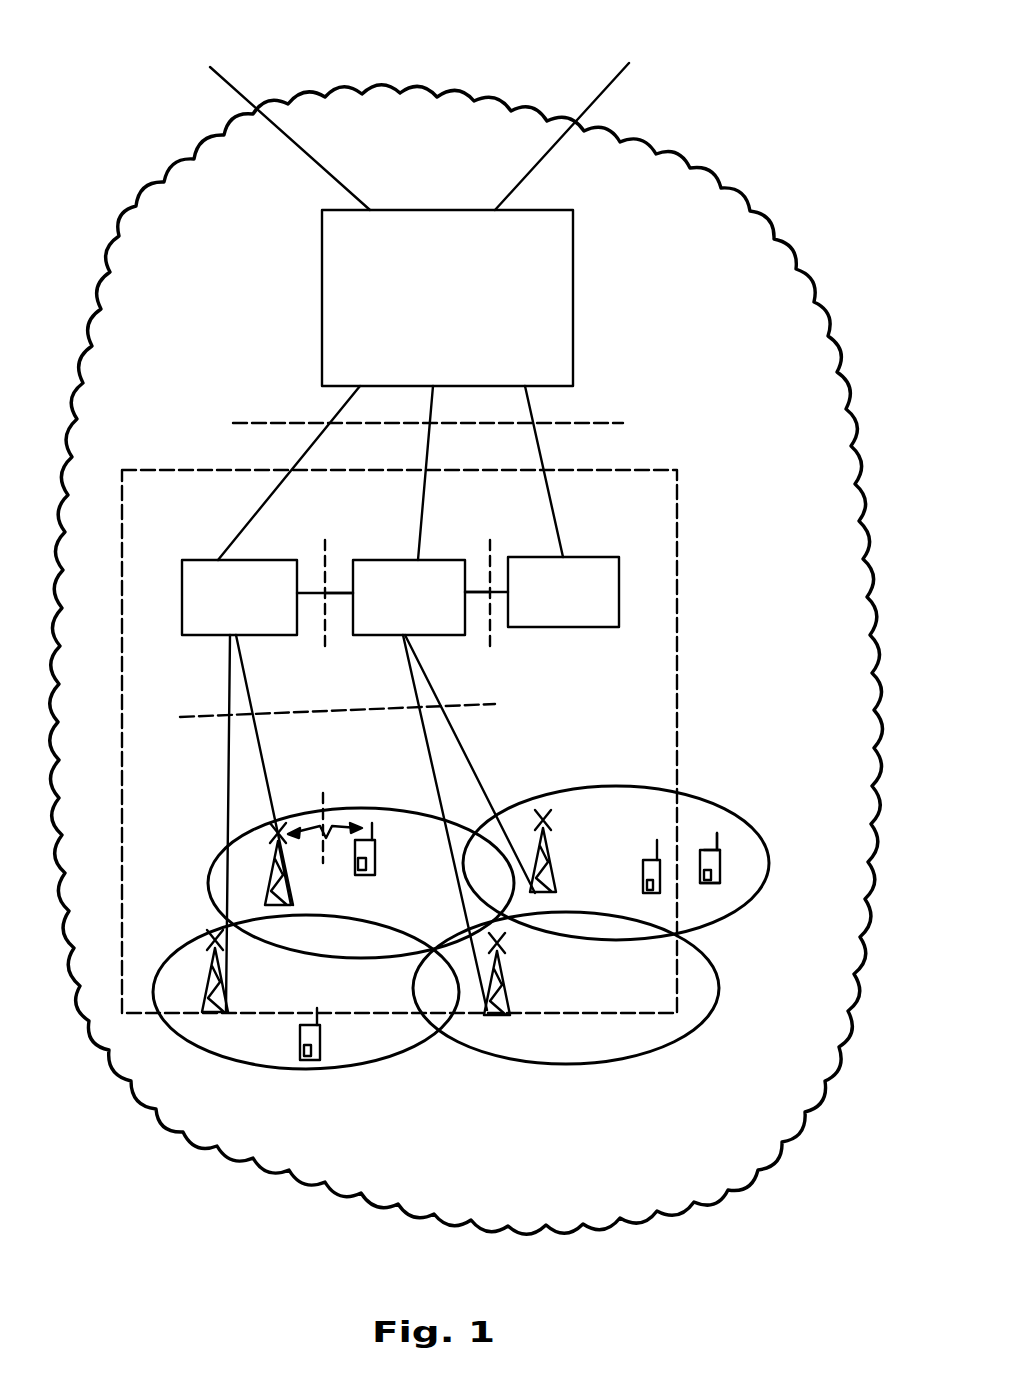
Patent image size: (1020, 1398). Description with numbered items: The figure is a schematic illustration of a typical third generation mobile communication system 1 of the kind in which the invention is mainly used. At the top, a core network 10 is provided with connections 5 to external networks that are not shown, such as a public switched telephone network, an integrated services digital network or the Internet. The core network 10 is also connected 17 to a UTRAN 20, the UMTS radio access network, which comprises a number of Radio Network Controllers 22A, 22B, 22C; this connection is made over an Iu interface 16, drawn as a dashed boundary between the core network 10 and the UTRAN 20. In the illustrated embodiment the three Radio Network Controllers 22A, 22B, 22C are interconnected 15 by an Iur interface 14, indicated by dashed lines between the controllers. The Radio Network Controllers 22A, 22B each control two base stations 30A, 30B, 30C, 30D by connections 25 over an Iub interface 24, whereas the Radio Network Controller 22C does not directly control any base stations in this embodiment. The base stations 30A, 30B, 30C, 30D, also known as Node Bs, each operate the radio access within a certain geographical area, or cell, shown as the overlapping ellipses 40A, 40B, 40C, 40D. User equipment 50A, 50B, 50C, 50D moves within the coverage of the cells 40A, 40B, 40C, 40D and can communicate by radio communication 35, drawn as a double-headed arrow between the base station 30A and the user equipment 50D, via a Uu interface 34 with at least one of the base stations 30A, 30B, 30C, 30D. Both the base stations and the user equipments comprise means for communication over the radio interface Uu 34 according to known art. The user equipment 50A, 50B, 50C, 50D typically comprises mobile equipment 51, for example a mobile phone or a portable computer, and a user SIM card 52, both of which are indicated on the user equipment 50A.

The mobile communication system 1 is at (720, 1200).
The connections to external networks 5 is at (219, 78).
The core network 10 is at (322, 332).
The Iur interface 14 is at (322, 560).
The interconnection 15 is at (348, 585).
The Iu interface 16 is at (250, 423).
The connection 17 is at (236, 535).
The UTRAN 20 is at (677, 497).
The Radio Network Controller 22A is at (213, 598).
The Radio Network Controller 22B is at (385, 605).
The Radio Network Controller 22C is at (568, 620).
The Iub interface 24 is at (492, 706).
The connections 25 is at (230, 748).
The base station 30A is at (225, 885).
The base station 30B is at (557, 858).
The base station 30C is at (203, 1010).
The base station 30D is at (486, 1020).
The Uu interface 34 is at (320, 790).
The radio communication 35 is at (352, 828).
The cell 40A is at (215, 860).
The cell 40B is at (583, 795).
The cell 40C is at (236, 1040).
The cell 40D is at (625, 1045).
The user equipment 50A is at (703, 850).
The user equipment 50B is at (648, 858).
The user equipment 50C is at (316, 1062).
The user equipment 50D is at (375, 872).
The mobile equipment 51 is at (720, 862).
The SIM card 52 is at (720, 885).